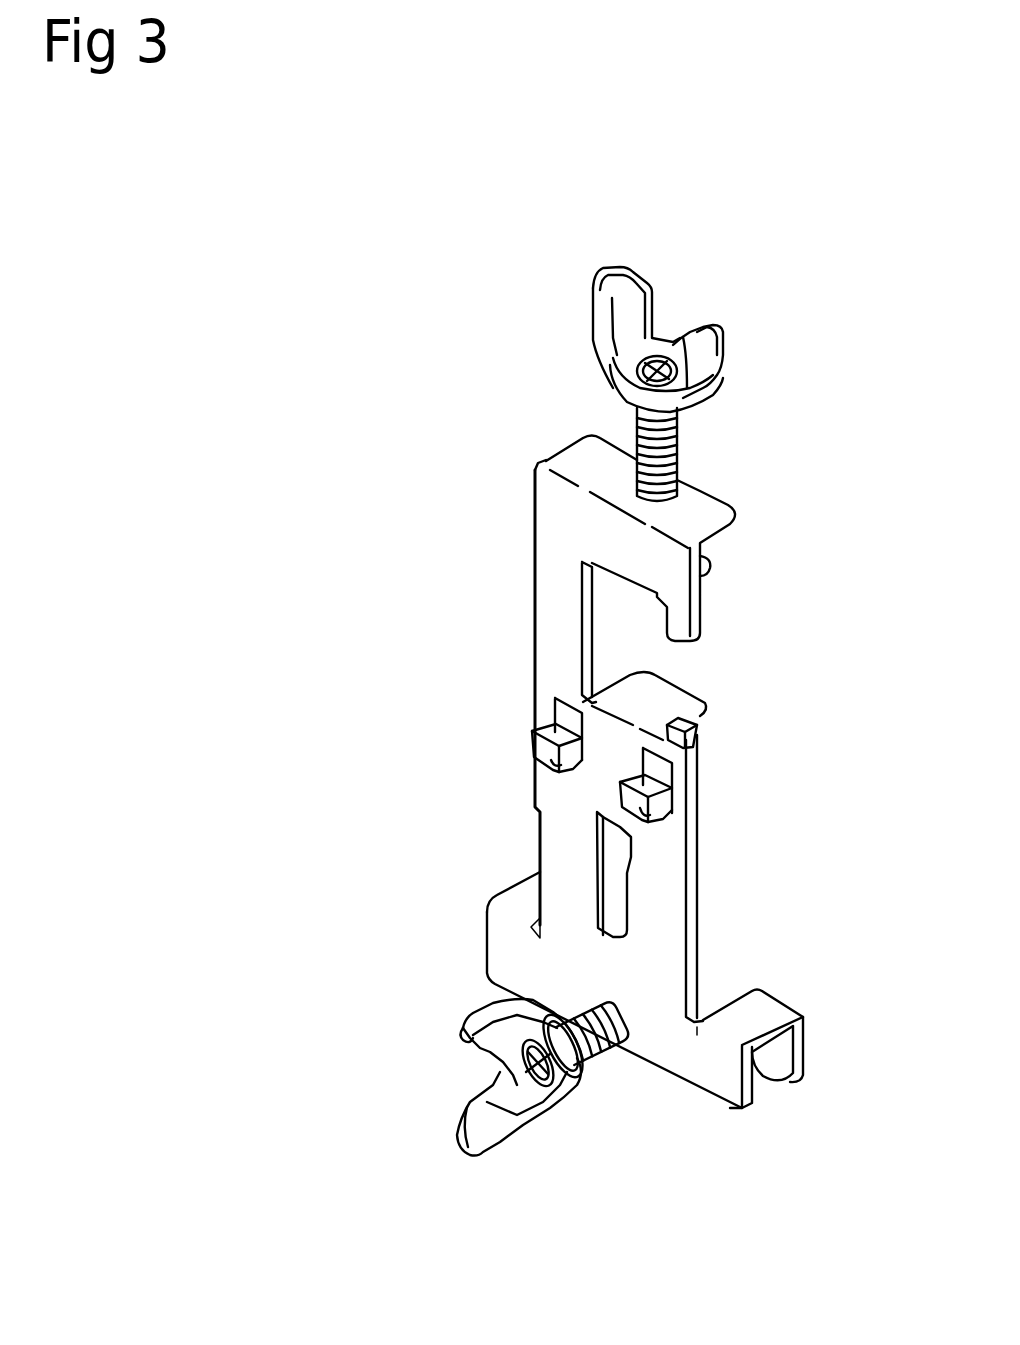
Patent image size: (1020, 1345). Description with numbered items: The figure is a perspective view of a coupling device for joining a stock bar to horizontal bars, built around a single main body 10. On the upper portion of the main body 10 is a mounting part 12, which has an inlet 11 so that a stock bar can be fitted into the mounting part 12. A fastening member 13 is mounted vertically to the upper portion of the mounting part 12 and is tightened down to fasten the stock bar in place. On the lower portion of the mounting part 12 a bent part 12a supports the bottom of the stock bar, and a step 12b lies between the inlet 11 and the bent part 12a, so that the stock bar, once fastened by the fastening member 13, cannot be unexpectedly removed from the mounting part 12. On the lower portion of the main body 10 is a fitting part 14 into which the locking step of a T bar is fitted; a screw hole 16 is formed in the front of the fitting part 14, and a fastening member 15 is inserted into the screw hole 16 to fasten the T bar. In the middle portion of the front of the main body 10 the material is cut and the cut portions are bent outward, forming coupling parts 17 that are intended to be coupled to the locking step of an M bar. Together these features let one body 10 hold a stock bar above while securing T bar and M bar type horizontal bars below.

The main body 10 is at (503, 456).
The inlet 11 is at (677, 665).
The mounting part 12 is at (612, 637).
The bent part 12a is at (667, 708).
The step 12b is at (678, 743).
The fastening member 13 is at (700, 370).
The fitting part 14 is at (763, 1077).
The fastening member 15 is at (522, 1123).
The screw hole 16 is at (622, 1012).
The coupling parts 17 is at (553, 758).